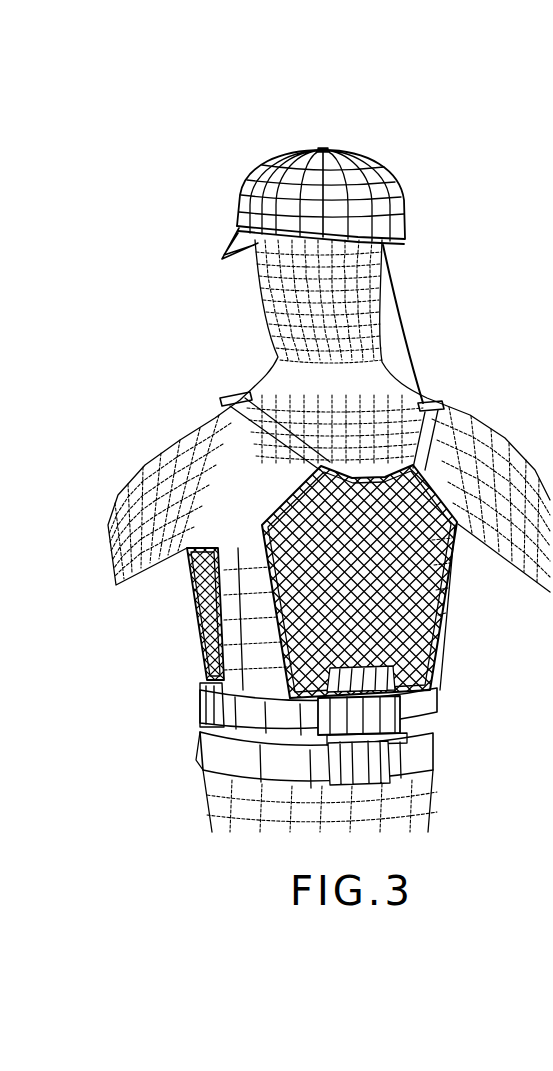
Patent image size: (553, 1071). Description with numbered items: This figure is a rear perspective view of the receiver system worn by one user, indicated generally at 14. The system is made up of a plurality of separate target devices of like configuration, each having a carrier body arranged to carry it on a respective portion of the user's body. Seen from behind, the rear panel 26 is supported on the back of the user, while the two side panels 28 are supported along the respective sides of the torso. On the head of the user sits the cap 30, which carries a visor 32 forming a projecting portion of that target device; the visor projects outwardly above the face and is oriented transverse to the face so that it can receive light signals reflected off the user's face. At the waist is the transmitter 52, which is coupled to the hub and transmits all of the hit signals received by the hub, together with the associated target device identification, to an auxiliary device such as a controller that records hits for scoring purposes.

The wearer / user 14 is at (332, 82).
The rear panel 26 is at (442, 612).
The side panels 28 is at (197, 622).
The cap 30 is at (382, 192).
The visor 32 is at (238, 247).
The transmitter 52 is at (413, 727).